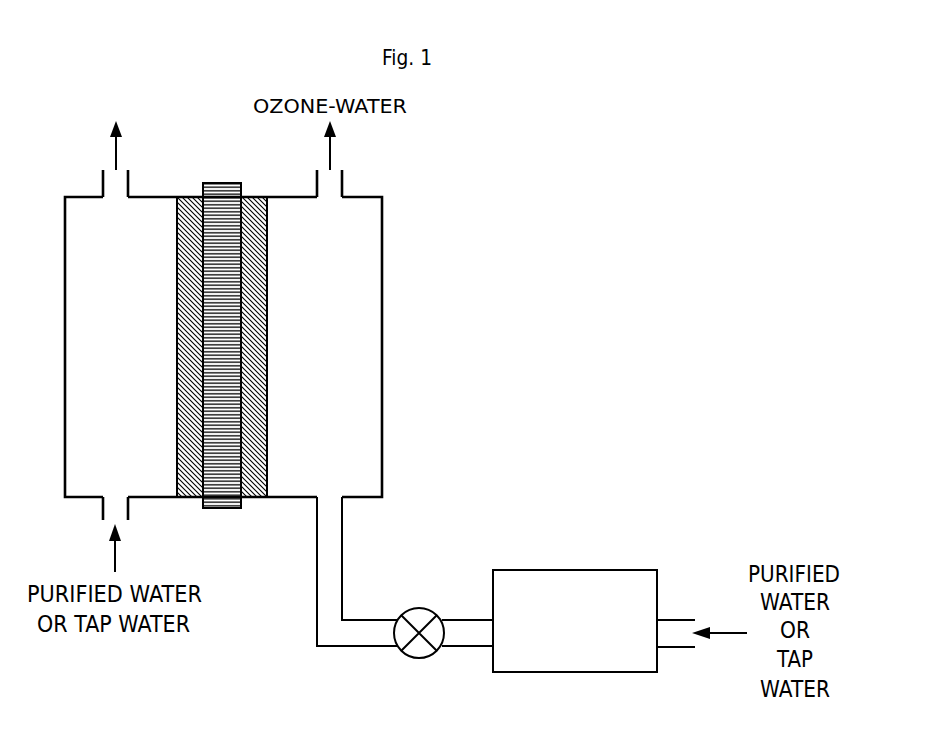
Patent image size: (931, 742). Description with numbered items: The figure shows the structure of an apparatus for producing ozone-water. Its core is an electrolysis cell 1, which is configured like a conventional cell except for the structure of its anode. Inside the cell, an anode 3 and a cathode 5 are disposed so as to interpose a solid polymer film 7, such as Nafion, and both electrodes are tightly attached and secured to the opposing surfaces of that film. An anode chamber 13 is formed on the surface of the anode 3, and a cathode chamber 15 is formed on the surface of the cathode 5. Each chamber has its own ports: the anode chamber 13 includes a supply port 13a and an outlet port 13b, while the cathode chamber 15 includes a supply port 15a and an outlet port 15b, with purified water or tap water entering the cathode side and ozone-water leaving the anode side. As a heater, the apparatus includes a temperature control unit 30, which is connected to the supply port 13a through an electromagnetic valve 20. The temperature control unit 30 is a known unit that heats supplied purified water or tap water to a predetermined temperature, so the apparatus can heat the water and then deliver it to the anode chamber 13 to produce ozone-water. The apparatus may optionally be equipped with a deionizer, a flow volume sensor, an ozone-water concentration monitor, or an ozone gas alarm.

The electrolysis cell 1 is at (394, 306).
The anode 3 is at (260, 380).
The cathode 5 is at (177, 287).
The solid polymer film 7 is at (220, 188).
The anode chamber 13 is at (355, 222).
The supply port 13a is at (315, 520).
The outlet port 13b is at (343, 183).
The cathode chamber 15 is at (88, 222).
The supply port 15a is at (102, 508).
The outlet port 15b is at (130, 183).
The electromagnetic valve 20 is at (418, 608).
The temperature control unit 30 is at (622, 567).